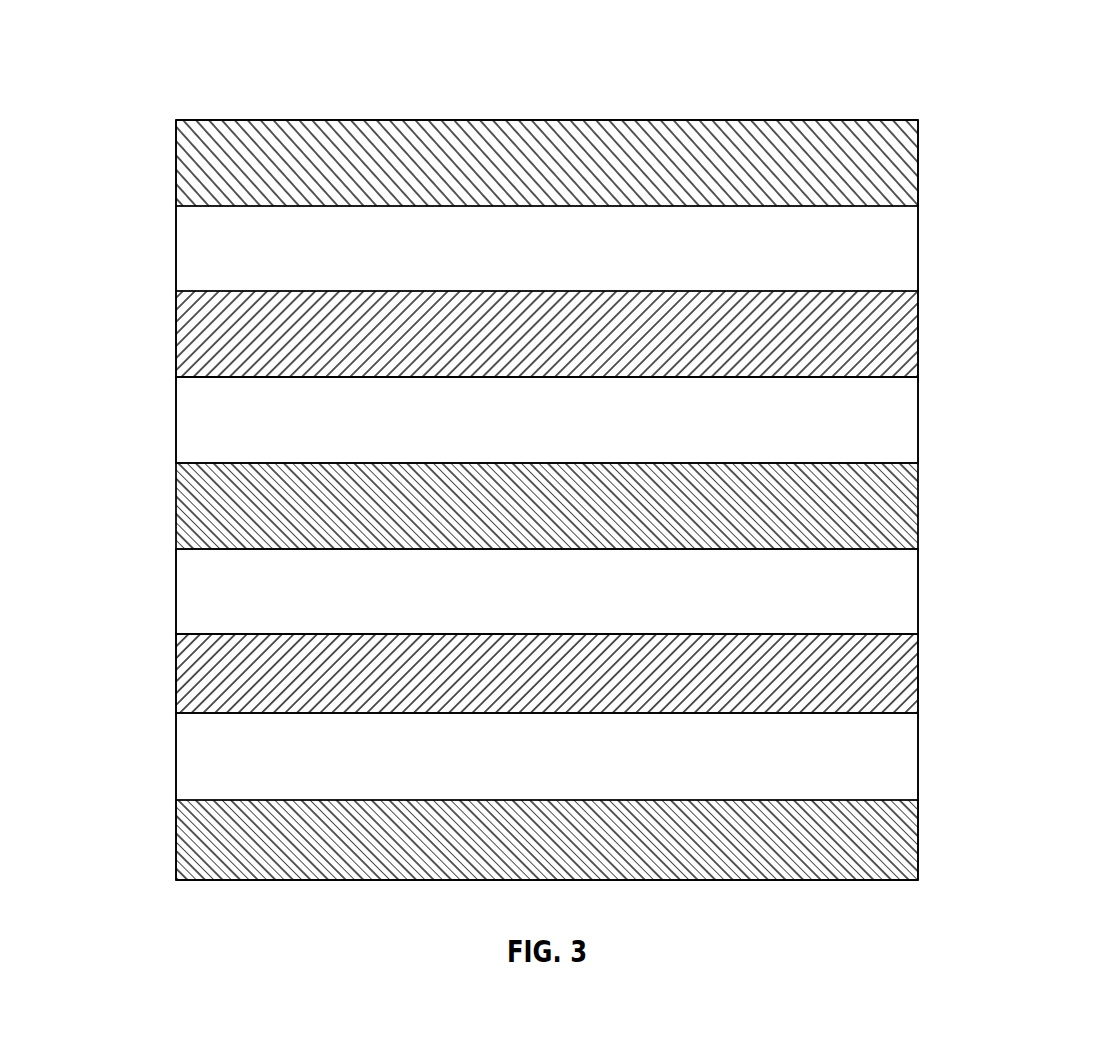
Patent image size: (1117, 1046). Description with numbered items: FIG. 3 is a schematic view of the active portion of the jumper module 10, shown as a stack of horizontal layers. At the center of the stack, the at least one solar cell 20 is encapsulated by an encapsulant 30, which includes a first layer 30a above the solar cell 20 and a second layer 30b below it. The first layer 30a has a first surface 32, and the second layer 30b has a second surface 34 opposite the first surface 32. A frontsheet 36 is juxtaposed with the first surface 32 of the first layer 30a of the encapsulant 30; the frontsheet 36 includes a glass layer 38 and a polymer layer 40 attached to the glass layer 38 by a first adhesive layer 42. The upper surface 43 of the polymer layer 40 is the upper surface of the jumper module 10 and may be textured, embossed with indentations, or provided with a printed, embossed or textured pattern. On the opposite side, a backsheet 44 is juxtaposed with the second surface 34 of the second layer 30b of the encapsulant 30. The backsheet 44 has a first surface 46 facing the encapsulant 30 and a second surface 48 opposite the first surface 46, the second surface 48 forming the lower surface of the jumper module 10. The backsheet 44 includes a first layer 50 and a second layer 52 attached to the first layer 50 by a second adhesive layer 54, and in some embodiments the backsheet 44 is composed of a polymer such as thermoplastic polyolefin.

The jumper module 10 is at (1031, 72).
The solar cell 20 is at (897, 508).
The encapsulant 30 is at (204, 433).
The first layer 30a is at (897, 433).
The second layer 30b is at (897, 592).
The first surface 32 is at (895, 378).
The second surface 34 is at (823, 713).
The frontsheet 36 is at (952, 337).
The glass layer 38 is at (208, 337).
The polymer layer 40 is at (208, 172).
The first adhesive layer 42 is at (208, 250).
The upper surface 43 is at (228, 120).
The backsheet 44 is at (952, 837).
The first surface 46 is at (207, 633).
The second surface 48 is at (230, 881).
The first layer 50 is at (208, 675).
The second layer 52 is at (208, 848).
The second adhesive layer 54 is at (208, 762).